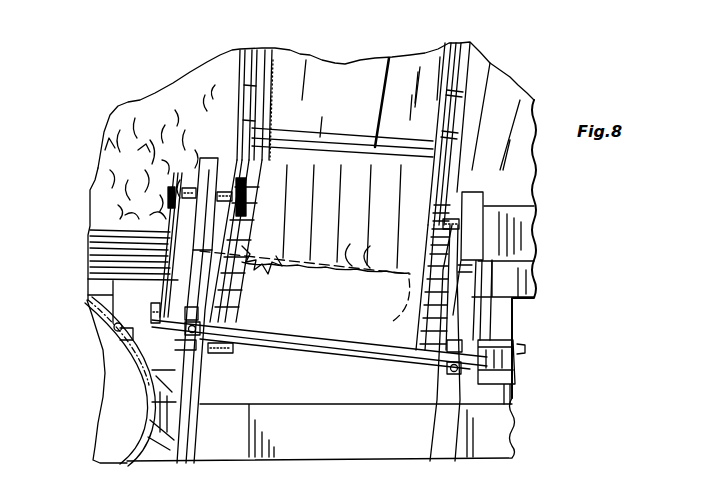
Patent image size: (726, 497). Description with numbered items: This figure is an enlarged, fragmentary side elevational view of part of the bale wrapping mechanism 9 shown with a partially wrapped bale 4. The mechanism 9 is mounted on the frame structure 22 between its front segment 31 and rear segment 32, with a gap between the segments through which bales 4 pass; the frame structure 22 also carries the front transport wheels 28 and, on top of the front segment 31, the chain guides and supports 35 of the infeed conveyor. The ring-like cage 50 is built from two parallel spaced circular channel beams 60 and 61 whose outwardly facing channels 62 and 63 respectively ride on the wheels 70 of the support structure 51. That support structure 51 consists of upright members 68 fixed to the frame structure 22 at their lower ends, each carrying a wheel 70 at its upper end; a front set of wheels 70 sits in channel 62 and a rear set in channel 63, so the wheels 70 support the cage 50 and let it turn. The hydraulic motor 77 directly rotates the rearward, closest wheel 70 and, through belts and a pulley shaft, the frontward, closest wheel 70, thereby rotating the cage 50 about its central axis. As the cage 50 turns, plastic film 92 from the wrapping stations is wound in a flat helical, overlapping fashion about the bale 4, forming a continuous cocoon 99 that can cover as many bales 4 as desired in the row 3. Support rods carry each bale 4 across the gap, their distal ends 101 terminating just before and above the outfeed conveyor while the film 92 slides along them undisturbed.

The row of wrapped bales 3 is at (124, 100).
The bale 4 is at (517, 83).
The bale wrapping mechanism 9 is at (308, 356).
The frame structure 22 is at (210, 458).
The front transport wheels 28 is at (130, 466).
The front segment 31 is at (95, 298).
The rear segment 32 is at (514, 396).
The chain guide and support 35 is at (90, 253).
The cage 50 is at (482, 55).
The support structure 51 is at (185, 377).
The channel beam 60 is at (240, 87).
The channel beam 61 is at (465, 128).
The channel 62 is at (250, 130).
The channel 63 is at (447, 143).
The upright member 68 is at (217, 159).
The wheel 70 is at (250, 203).
The hydraulic motor 77 is at (520, 206).
The plastic film 92 is at (376, 292).
The cocoon 99 is at (540, 101).
The distal end 101 is at (394, 317).